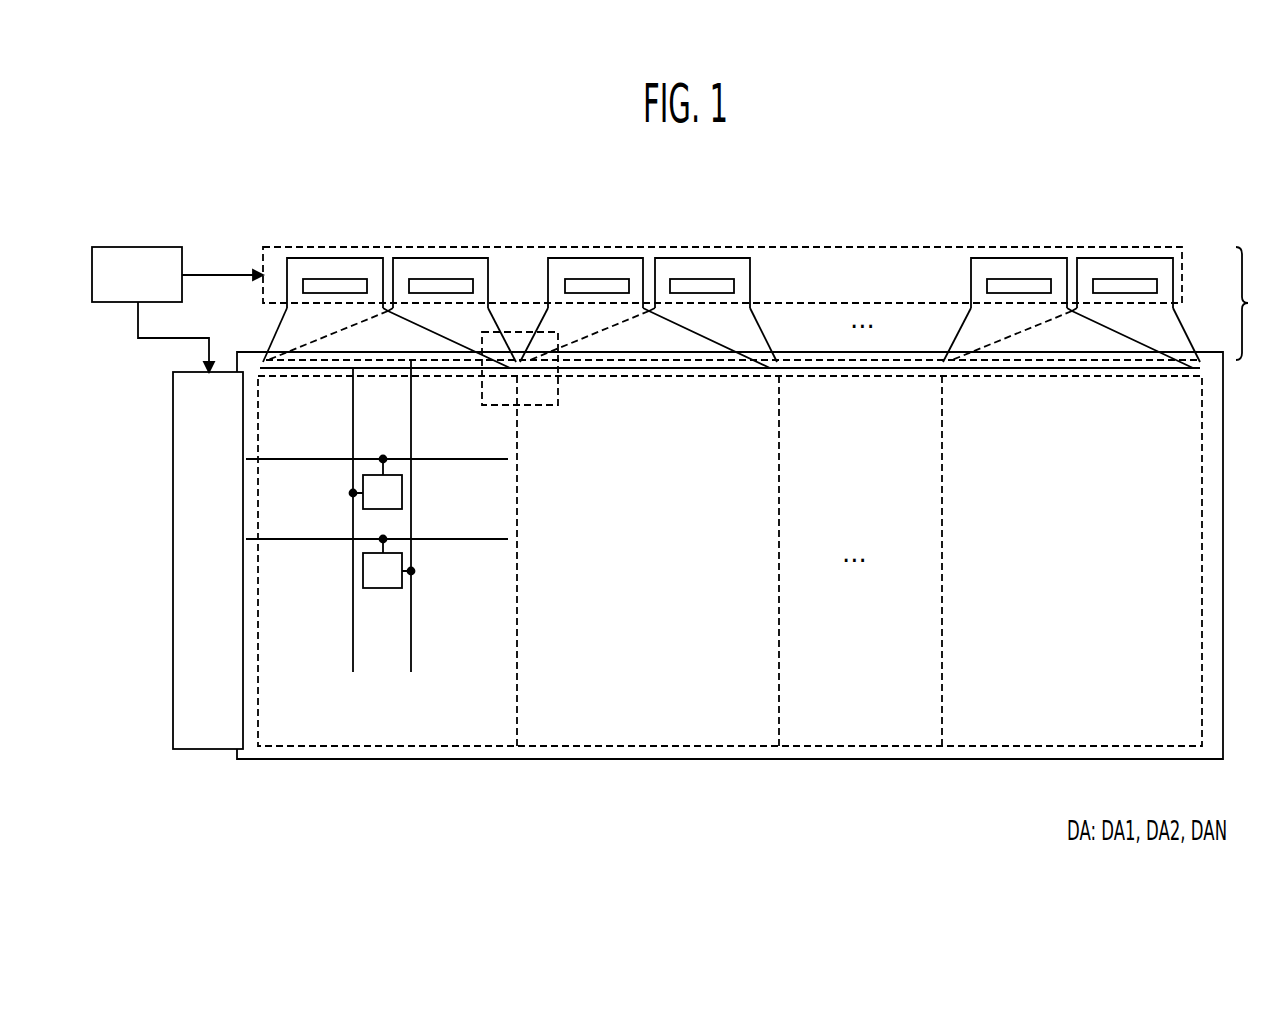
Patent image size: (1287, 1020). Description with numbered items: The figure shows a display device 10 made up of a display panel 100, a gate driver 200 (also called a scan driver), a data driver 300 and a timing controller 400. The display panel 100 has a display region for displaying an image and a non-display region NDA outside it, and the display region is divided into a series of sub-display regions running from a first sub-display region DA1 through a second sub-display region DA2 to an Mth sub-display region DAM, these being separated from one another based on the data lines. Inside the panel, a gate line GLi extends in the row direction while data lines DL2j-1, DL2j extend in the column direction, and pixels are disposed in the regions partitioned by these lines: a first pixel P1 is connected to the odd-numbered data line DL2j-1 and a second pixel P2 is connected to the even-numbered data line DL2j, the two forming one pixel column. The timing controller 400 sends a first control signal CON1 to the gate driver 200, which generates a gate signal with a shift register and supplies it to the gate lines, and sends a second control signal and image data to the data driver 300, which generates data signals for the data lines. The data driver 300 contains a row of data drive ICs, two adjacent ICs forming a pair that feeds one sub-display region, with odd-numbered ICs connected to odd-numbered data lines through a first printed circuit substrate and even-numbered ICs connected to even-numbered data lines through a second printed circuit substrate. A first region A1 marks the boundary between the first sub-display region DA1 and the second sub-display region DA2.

The display device 10 is at (1183, 172).
The timing controller 400 is at (137, 247).
The first control signal CON1 is at (151, 337).
The data driver 300 is at (772, 303).
The display panel 100 is at (1223, 508).
The non-display region NDA is at (1215, 688).
The first sub-display region DA1 is at (455, 710).
The second sub-display region DA2 is at (709, 710).
The Mth sub-display region DAM is at (1055, 710).
The gate driver 200 is at (173, 558).
The first region A1 is at (545, 405).
The first data line DL2j-1 is at (353, 417).
The second data line DL2j is at (411, 418).
The gate line GLi is at (317, 459).
The first pixel P1 is at (402, 490).
The second pixel P2 is at (405, 577).